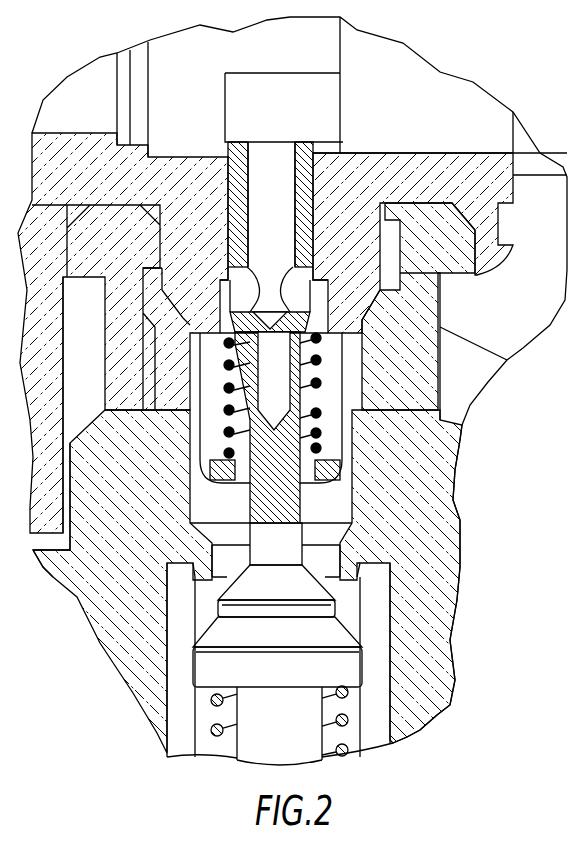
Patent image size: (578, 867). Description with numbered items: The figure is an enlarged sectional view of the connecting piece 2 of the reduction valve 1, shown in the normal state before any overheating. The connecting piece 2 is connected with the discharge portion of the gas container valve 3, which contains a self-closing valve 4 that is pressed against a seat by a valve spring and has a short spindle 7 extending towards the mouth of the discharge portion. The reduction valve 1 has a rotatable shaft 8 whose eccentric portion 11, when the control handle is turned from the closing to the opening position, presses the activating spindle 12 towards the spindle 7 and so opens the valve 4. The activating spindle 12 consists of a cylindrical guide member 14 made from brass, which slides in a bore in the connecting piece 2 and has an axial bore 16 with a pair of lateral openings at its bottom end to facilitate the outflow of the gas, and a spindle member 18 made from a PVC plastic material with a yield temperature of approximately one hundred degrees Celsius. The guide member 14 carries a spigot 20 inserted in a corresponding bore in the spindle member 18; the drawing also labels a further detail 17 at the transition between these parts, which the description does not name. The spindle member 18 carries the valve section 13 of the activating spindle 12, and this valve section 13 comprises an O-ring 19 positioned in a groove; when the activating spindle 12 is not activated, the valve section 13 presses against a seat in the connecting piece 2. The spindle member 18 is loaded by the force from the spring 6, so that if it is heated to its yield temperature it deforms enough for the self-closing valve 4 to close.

The reduction valve 1 is at (62, 163).
The connecting piece 2 is at (201, 270).
The gas container valve 3 is at (433, 488).
The self-closing valve 4 is at (315, 633).
The spring 6 is at (342, 722).
The spindle 7 is at (284, 559).
The rotatable shaft 8 is at (410, 118).
The eccentric portion 11 is at (280, 88).
The activating spindle 12 is at (226, 193).
The valve section 13 is at (357, 345).
The cylindrical guide member 14 is at (306, 207).
The axial bore 16 is at (284, 247).
The valve ball seat 17 is at (298, 296).
The spindle member 18 is at (285, 518).
The O-ring 19 is at (223, 334).
The spigot 20 is at (268, 382).